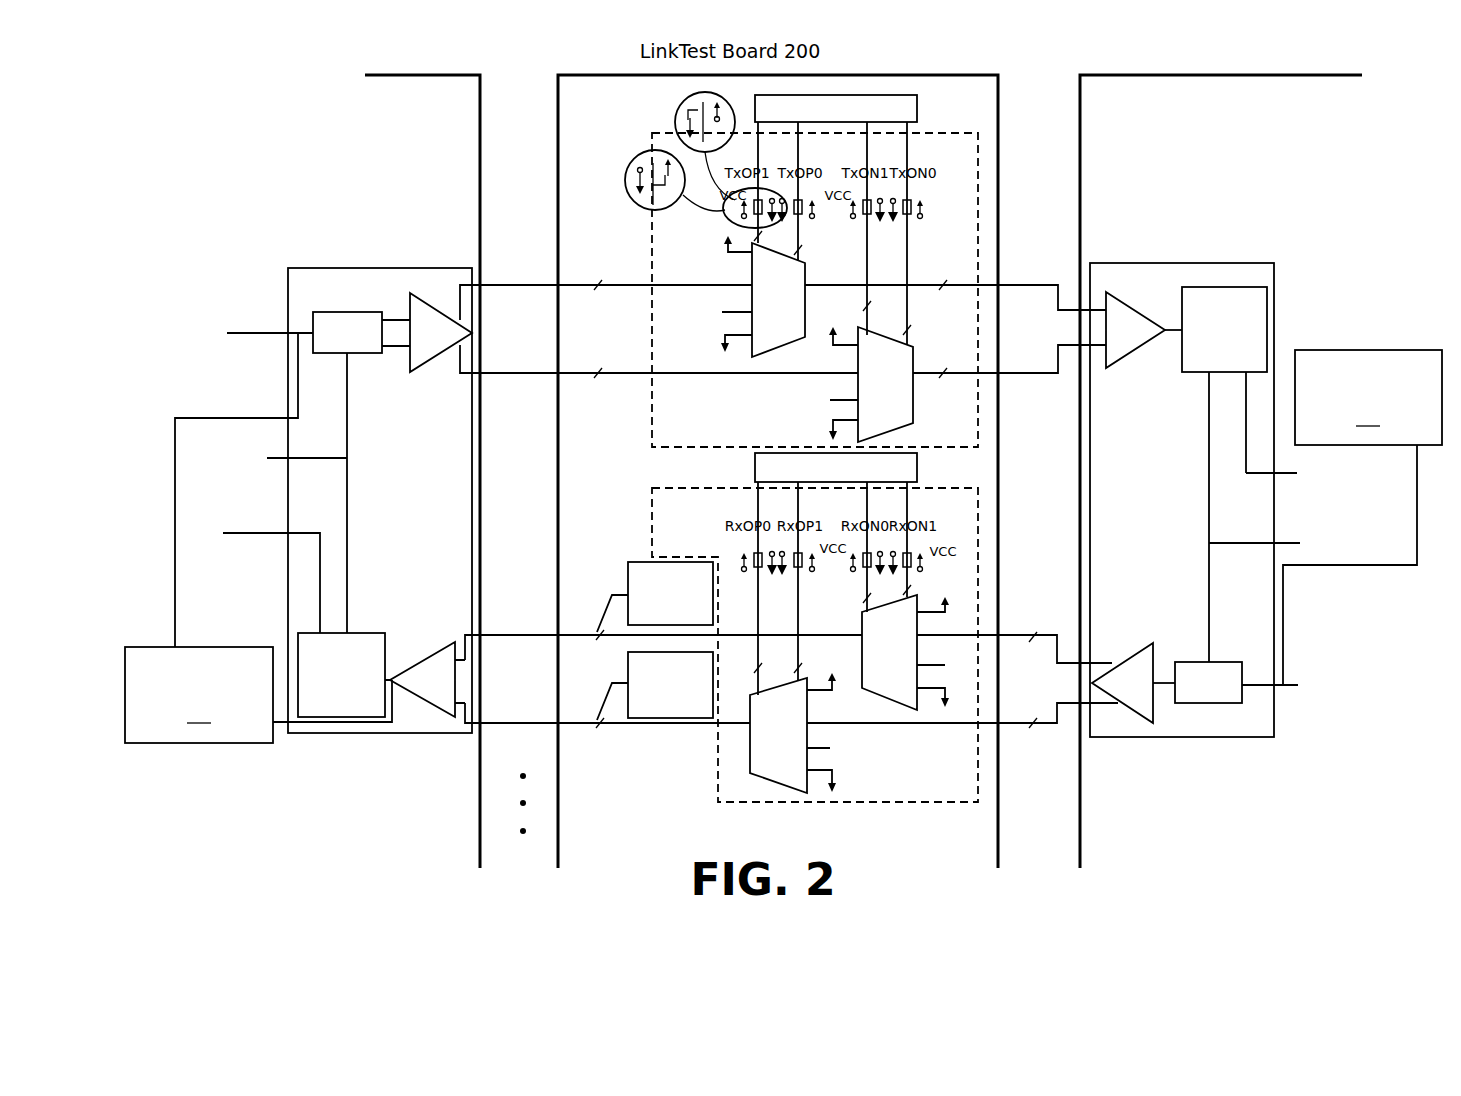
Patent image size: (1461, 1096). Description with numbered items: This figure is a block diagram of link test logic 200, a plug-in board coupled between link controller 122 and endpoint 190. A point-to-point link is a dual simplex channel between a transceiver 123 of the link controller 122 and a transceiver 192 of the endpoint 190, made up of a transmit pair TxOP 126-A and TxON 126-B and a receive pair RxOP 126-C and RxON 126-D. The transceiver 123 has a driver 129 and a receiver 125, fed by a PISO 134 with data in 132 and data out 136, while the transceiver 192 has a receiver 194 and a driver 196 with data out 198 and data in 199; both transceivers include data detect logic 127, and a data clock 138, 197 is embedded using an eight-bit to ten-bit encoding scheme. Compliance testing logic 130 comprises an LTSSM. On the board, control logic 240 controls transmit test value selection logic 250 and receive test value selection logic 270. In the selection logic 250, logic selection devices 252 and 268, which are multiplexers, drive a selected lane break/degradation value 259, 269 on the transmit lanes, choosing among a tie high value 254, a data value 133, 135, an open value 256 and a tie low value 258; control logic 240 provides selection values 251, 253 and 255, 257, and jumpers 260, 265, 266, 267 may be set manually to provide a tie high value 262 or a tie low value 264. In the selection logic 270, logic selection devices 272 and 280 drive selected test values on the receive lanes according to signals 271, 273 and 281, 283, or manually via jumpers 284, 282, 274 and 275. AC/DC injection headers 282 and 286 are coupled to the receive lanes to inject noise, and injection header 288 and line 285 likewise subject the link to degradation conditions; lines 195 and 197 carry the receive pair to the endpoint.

The link controller 122 is at (385, 161).
The transceiver 123 is at (401, 522).
The receiver 125 is at (407, 672).
The transmit lane TxOP 126-A is at (535, 308).
The transmit lane TxON 126-B is at (535, 395).
The receive lane RxOP 126-C is at (535, 652).
The receive lane RxON 126-D is at (540, 738).
The data detect logic 127 is at (365, 633).
The driver 129 is at (420, 372).
The compliance testing logic 130 is at (783, 546).
The data in 132 is at (244, 490).
The data value 133 is at (593, 297).
The PISO 134 is at (329, 313).
The TxON signal line 135 is at (593, 385).
The data out 136 is at (271, 583).
The data clock 138 is at (287, 493).
The endpoint 190 is at (1131, 170).
The transceiver 192 is at (1228, 725).
The receiver 194 is at (1128, 361).
The RxOP signal line to endpoint 195 is at (1027, 648).
The driver 196 is at (1150, 641).
The data clock 197 is at (1188, 645).
The data out 198 is at (1306, 478).
The data in 199 is at (1298, 676).
The link test logic 200 is at (585, 108).
The control logic 240 is at (824, 117).
The transmit test value selection logic 250 is at (928, 256).
The selection value 251 is at (743, 233).
The logic selection device 252 is at (773, 306).
The selection value 253 is at (814, 244).
The tie high value 254 is at (638, 252).
The selection value 255 is at (881, 304).
The open value 256 is at (652, 318).
The selection value 257 is at (919, 325).
The tie low value 258 is at (642, 353).
The selected lane break/degradation value 259 is at (941, 296).
The jumper 260 is at (724, 213).
The tie high value 262 is at (631, 165).
The tie low value 264 is at (675, 120).
The jumper 265 is at (801, 199).
The jumper 266 is at (871, 199).
The jumper 267 is at (912, 201).
The logic selection device 268 is at (883, 389).
The selected lane break/degradation value 269 is at (941, 382).
The receive test value selection logic 270 is at (891, 788).
The signal 271 is at (922, 586).
The logic selection device 272 is at (863, 658).
The signal 273 is at (851, 596).
The jumper 274 is at (912, 553).
The jumper 275 is at (871, 553).
The logic selection device 280 is at (751, 737).
The signal 281 is at (809, 661).
The AC/DC injection header 282 is at (801, 553).
The signal 283 is at (744, 663).
The jumper 284 is at (744, 555).
The RxON signal line 285 is at (589, 733).
The AC/DC injection header 286 is at (645, 561).
The injection header 288 is at (589, 644).